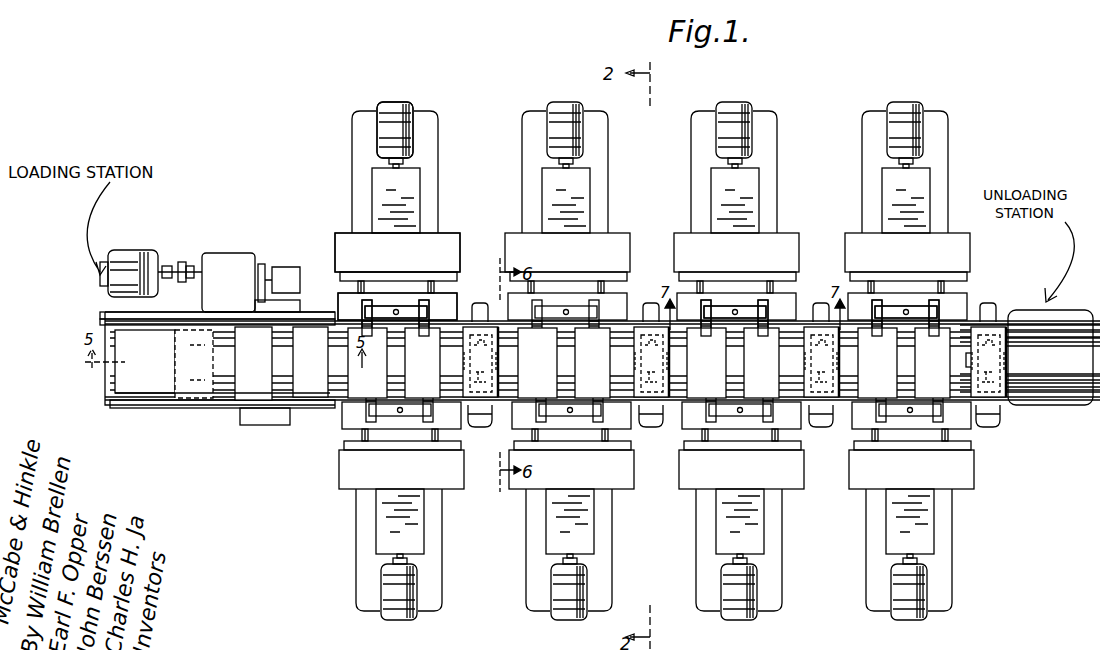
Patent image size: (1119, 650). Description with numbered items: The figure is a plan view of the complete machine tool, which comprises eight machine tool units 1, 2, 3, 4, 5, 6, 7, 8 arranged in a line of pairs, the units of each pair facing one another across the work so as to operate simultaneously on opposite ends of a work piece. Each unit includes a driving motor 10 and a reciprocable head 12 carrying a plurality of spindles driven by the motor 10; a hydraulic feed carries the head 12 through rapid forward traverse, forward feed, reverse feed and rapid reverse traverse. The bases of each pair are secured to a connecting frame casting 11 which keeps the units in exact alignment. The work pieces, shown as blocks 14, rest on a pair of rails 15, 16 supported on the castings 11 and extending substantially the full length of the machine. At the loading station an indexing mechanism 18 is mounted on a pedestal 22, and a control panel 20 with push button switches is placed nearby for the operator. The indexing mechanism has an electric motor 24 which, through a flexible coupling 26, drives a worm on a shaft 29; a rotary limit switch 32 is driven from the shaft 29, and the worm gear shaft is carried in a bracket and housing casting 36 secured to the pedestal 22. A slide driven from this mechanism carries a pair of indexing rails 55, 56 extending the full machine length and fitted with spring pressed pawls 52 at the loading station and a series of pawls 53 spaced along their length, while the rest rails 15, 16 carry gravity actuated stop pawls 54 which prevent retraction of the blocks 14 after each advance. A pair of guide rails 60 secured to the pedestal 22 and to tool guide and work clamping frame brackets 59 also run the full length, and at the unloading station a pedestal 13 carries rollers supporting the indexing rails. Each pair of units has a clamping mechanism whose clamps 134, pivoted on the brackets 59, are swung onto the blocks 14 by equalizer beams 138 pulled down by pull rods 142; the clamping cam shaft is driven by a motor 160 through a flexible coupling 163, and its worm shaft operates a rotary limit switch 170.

The machine tool unit 1 is at (355, 175).
The machine tool unit 2 is at (360, 557).
The machine tool unit 3 is at (524, 168).
The machine tool unit 4 is at (530, 558).
The machine tool unit 5 is at (695, 180).
The machine tool unit 6 is at (705, 548).
The machine tool unit 7 is at (865, 186).
The machine tool unit 8 is at (893, 530).
The driving motor 10 is at (548, 110).
The connecting frame casting 11 is at (168, 372).
The reciprocable head 12 is at (405, 261).
The pedestal 13 is at (1065, 400).
The work piece block 14 is at (245, 398).
The rest rail 15 is at (290, 286).
The rest rail 16 is at (282, 405).
The indexing mechanism 18 is at (252, 245).
The control panel 20 is at (265, 425).
The pedestal 22 is at (150, 316).
The electric motor 24 is at (133, 250).
The flexible coupling 26 is at (182, 262).
The shaft 29 is at (228, 282).
The rotary limit switch 32 is at (262, 268).
The bracket and housing casting 36 is at (246, 302).
The indexing pawl 52 is at (230, 340).
The indexing pawl 53 is at (918, 355).
The stop pawl 54 is at (505, 355).
The indexing rail 55 is at (145, 361).
The indexing rail 56 is at (190, 398).
The tool guide and work clamping frame bracket 59 is at (345, 300).
The guide rail 60 is at (470, 305).
The clamp 134 is at (760, 312).
The equalizer beam 138 is at (940, 314).
The pull rod 142 is at (398, 312).
The motor 160 is at (472, 413).
The flexible coupling 163 is at (665, 428).
The rotary limit switch 170 is at (650, 302).